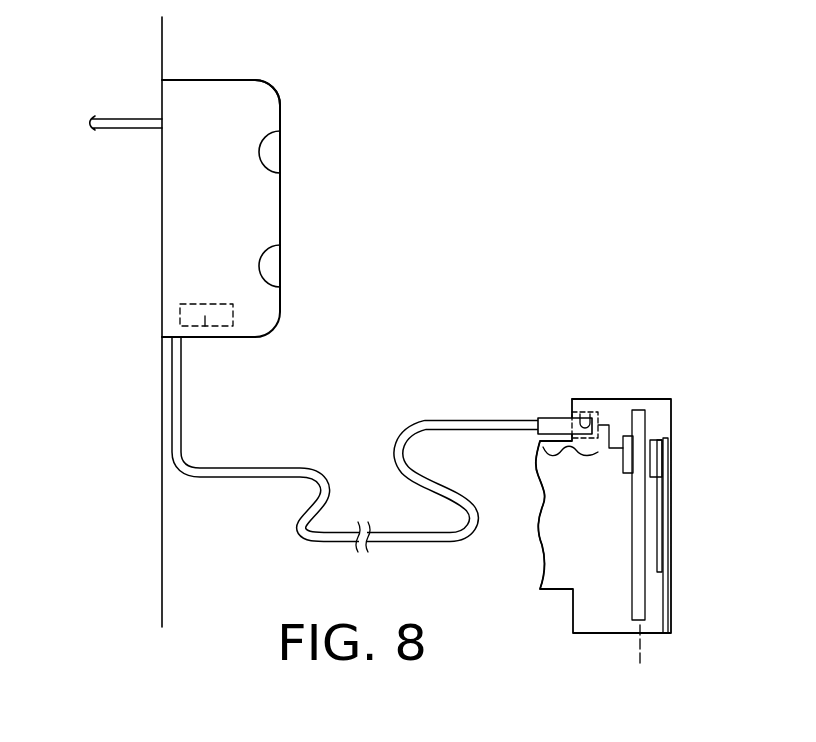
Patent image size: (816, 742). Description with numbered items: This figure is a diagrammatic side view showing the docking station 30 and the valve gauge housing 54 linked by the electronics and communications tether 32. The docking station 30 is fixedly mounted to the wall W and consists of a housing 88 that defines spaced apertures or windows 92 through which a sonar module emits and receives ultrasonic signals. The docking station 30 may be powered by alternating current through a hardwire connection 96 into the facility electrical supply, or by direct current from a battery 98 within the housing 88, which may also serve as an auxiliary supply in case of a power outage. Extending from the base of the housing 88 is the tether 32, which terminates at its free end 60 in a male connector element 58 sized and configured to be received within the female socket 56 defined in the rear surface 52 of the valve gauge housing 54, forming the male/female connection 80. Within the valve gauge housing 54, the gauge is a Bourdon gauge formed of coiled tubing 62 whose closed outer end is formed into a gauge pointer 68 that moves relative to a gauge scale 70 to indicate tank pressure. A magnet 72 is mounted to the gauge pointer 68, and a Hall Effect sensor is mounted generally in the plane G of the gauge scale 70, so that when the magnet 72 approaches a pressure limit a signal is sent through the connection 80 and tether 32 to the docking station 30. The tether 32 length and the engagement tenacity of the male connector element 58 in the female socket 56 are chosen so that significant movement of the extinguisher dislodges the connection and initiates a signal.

The docking station 30 is at (207, 103).
The housing 88 is at (255, 100).
The apertures or windows 92 is at (273, 152).
The hardwire connection 96 is at (119, 130).
The battery 98 is at (207, 333).
The tether 32 is at (258, 467).
The wall W is at (162, 550).
The valve gauge housing 54 is at (600, 635).
The gauge scale 70 is at (638, 606).
The magnet 72 is at (645, 450).
The coiled tubing 62 is at (658, 547).
The gauge pointer 68 is at (660, 438).
The female socket 56 is at (594, 400).
The plane of the gauge scale G is at (642, 652).
The free end 60 is at (514, 399).
The male connector element 58 is at (551, 420).
The rear surface 52 is at (577, 413).
The male/female connection 80 is at (574, 462).